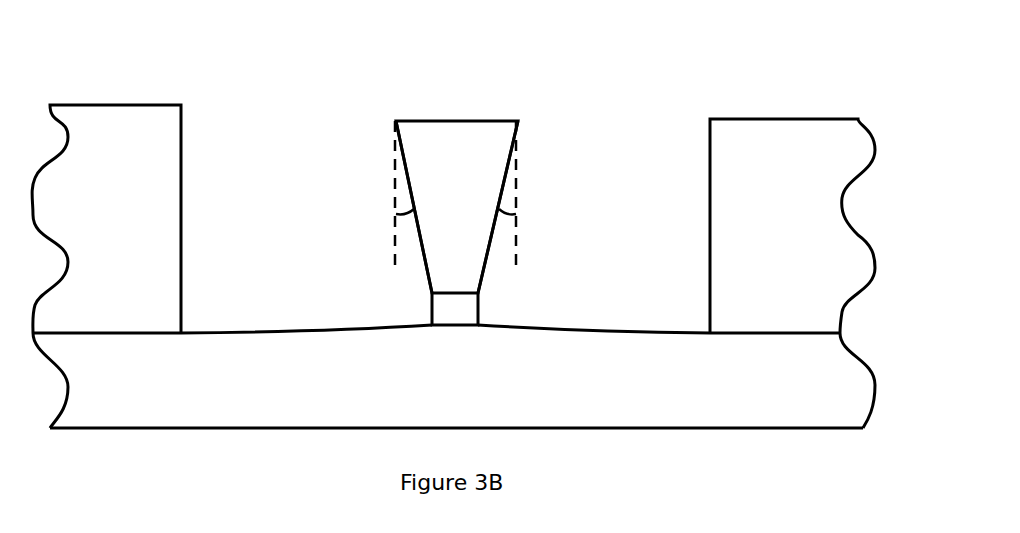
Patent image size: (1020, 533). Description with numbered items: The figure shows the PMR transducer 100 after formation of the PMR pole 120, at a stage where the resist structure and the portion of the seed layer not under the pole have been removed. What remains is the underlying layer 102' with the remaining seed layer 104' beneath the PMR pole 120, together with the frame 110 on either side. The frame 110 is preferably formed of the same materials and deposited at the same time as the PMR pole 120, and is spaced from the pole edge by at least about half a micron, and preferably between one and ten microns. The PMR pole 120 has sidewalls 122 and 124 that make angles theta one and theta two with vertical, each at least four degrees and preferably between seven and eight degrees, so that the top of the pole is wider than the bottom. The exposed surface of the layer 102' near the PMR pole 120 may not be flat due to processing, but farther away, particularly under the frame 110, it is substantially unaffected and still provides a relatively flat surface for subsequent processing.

The PMR transducer 100 is at (434, 37).
The underlying layer 102' is at (454, 393).
The remaining seed layer 104' is at (359, 295).
The frame 110 is at (86, 104).
The PMR pole 120 is at (455, 92).
The sidewall 122 is at (428, 283).
The sidewall 124 is at (488, 266).